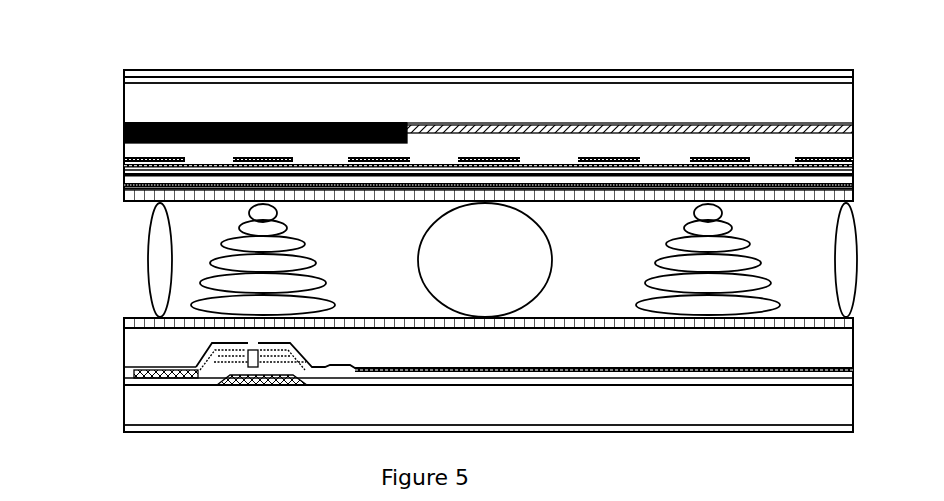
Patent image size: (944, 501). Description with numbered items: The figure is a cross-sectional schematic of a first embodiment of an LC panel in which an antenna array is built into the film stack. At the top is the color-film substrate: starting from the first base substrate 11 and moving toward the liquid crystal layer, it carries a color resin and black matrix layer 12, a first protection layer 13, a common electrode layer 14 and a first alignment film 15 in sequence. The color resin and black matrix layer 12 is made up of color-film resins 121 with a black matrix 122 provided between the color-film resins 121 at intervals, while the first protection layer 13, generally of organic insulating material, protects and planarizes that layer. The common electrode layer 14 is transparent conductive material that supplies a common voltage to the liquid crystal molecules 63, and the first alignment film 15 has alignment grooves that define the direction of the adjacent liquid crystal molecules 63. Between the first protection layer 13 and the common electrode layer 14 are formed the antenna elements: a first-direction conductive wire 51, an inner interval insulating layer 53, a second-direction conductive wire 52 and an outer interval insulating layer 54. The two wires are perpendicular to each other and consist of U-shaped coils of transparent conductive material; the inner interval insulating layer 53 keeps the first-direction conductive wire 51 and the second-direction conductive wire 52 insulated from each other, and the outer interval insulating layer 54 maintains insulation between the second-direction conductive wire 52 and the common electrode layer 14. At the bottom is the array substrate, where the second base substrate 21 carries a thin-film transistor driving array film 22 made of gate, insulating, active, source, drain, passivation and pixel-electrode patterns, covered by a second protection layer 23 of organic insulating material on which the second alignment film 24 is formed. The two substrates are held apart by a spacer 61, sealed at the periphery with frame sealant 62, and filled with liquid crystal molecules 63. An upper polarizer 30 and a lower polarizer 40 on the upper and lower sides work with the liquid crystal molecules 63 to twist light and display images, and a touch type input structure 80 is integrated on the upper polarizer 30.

The touch type input structure 80 is at (140, 72).
The upper polarizer 30 is at (130, 80).
The first base substrate 11 is at (133, 106).
The color resin and black matrix layer 12 is at (125, 136).
The black matrix 122 is at (207, 124).
The color-film resins 121 is at (663, 133).
The first protection layer 13 is at (448, 108).
The first-direction conductive wire 51 is at (477, 160).
The second-direction conductive wire 52 is at (605, 165).
The inner interval insulating layer 53 is at (553, 162).
The outer interval insulating layer 54 is at (432, 176).
The common electrode layer 14 is at (123, 187).
The first alignment film 15 is at (130, 199).
The frame sealant 62 is at (158, 262).
The spacer 61 is at (445, 265).
The liquid crystal molecules 63 is at (667, 257).
The second alignment film 24 is at (127, 318).
The second protection layer 23 is at (133, 340).
The thin-film transistor driving array film 22 is at (128, 372).
The second base substrate 21 is at (130, 406).
The lower polarizer 40 is at (128, 428).